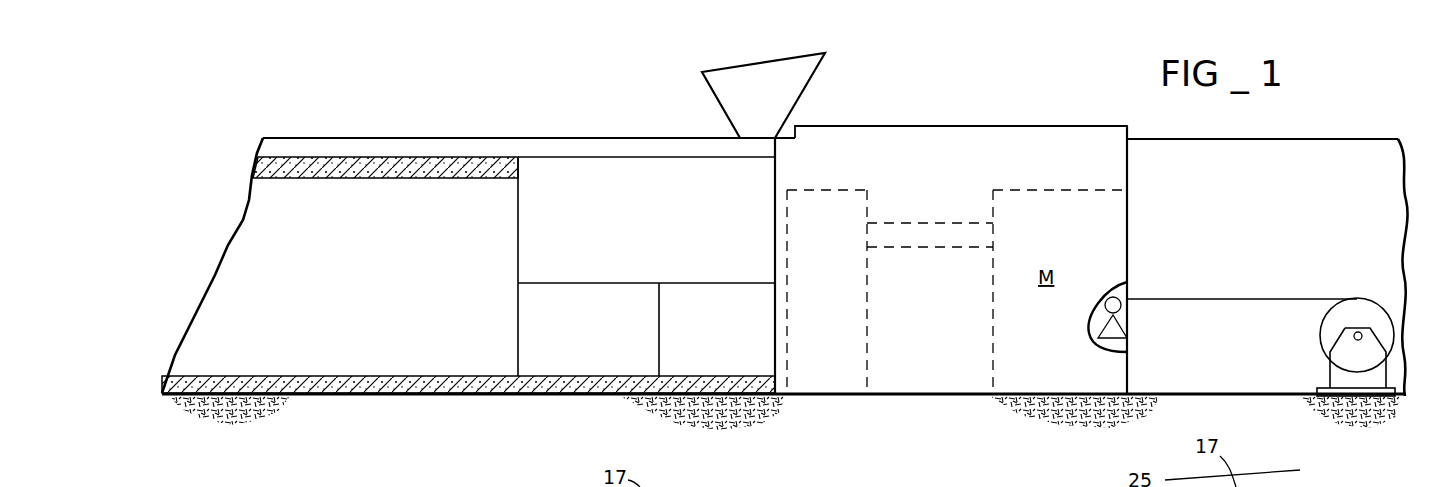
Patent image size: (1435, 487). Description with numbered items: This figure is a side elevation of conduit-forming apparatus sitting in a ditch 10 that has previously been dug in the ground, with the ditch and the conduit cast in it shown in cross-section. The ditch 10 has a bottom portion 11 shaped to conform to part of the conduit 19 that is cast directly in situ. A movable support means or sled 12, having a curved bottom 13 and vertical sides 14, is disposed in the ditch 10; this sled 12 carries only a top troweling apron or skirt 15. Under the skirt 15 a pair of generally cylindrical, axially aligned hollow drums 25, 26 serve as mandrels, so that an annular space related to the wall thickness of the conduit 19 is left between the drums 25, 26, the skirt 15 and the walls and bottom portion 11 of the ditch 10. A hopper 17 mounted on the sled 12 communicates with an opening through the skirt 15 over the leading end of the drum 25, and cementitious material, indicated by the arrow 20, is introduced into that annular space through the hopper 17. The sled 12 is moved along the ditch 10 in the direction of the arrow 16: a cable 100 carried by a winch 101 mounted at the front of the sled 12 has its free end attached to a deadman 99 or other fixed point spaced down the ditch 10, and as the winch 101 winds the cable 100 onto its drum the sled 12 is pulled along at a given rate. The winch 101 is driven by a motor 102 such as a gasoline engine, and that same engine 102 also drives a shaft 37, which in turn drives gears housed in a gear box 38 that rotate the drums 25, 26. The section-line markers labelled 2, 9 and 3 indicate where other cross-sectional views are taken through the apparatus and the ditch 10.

The ditch 10 is at (272, 152).
The section line 2- 2 is at (325, 130).
The section line 9- 9 is at (410, 130).
The section line 3- 3 is at (545, 130).
The top troweling apron or skirt 15 is at (640, 185).
The hollow drum 26 is at (614, 329).
The hollow drum 25 is at (710, 331).
The hopper 17 is at (786, 76).
The cementitious material 20 is at (750, 0).
The sled 12 is at (913, 100).
The vertical sides 14 is at (1000, 143).
The gear box 38 is at (828, 208).
The shaft 37 is at (915, 235).
The motor 102 is at (1062, 205).
The arrow 16 is at (1250, 232).
The cable 100 is at (1234, 299).
The deadman 99 is at (1377, 298).
The winch 101 is at (1118, 330).
The conduit 19 is at (610, 388).
The bottom portion 11 is at (756, 394).
The curved bottom 13 is at (925, 382).